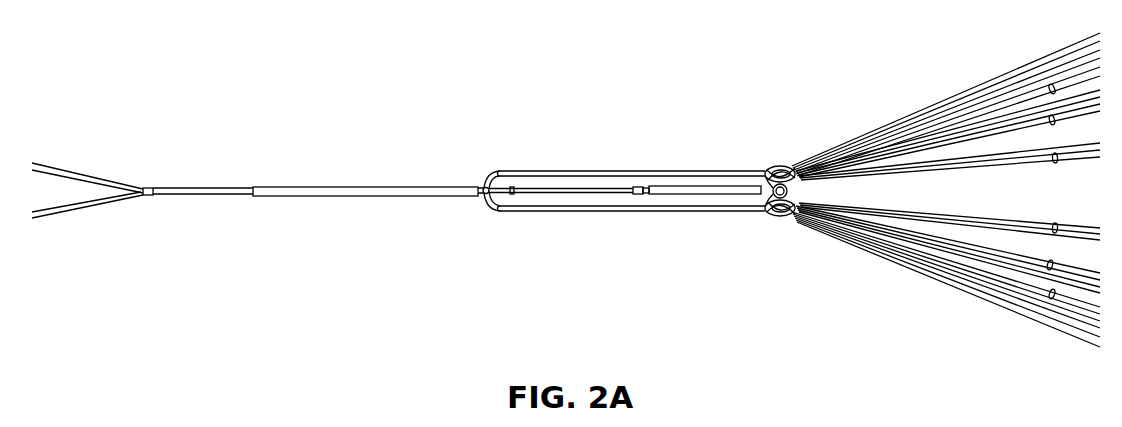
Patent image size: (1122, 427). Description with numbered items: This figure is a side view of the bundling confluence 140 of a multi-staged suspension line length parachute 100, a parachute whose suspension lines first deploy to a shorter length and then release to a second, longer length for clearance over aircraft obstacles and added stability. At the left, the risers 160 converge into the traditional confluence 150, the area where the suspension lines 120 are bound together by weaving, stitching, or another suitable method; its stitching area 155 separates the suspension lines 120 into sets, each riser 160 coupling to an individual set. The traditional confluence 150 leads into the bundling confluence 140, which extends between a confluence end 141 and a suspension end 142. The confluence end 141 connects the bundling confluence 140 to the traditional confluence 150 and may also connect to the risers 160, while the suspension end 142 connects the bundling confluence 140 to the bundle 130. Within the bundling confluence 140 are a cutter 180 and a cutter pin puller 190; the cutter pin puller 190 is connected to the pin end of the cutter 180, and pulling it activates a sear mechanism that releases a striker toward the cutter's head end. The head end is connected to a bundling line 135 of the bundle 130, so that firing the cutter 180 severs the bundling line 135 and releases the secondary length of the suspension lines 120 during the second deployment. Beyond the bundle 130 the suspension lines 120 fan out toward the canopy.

The multi-staged suspension line length parachute 100 is at (400, 128).
The suspension line 120 is at (914, 95).
The bundle 130 is at (776, 163).
The bundling line 135 is at (783, 216).
The bundling confluence 140 is at (760, 160).
The confluence end 141 is at (484, 197).
The suspension end 142 is at (766, 212).
The traditional confluence 150 is at (261, 186).
The stitching area 155 is at (145, 196).
The risers 160 is at (62, 214).
The cutter 180 is at (673, 195).
The cutter pin puller 190 is at (573, 194).